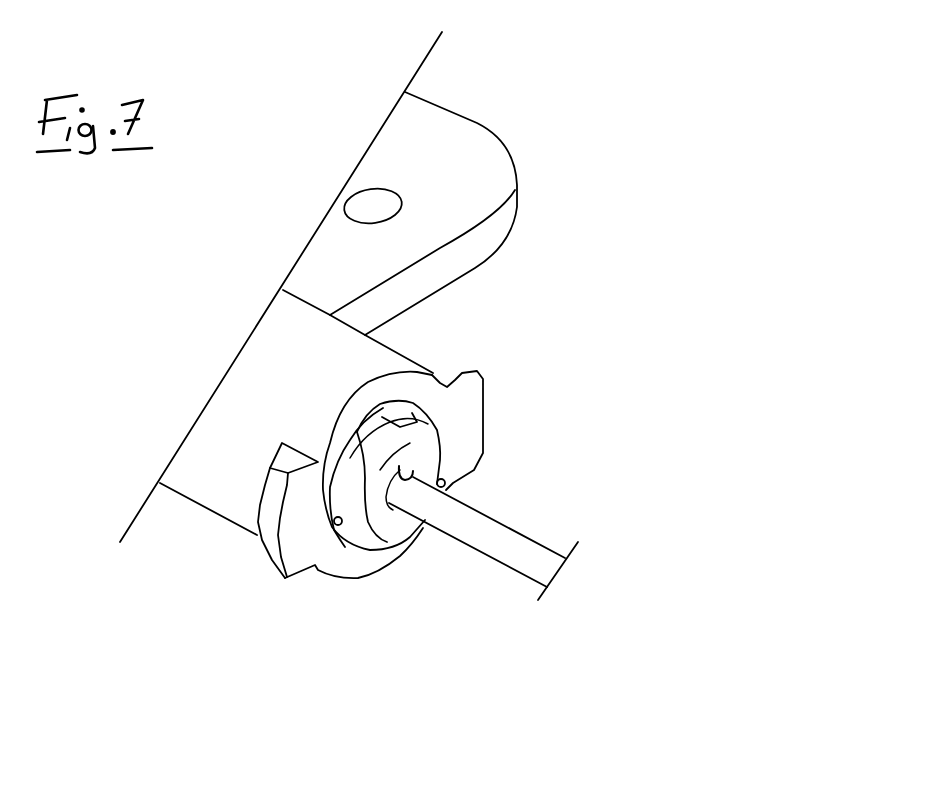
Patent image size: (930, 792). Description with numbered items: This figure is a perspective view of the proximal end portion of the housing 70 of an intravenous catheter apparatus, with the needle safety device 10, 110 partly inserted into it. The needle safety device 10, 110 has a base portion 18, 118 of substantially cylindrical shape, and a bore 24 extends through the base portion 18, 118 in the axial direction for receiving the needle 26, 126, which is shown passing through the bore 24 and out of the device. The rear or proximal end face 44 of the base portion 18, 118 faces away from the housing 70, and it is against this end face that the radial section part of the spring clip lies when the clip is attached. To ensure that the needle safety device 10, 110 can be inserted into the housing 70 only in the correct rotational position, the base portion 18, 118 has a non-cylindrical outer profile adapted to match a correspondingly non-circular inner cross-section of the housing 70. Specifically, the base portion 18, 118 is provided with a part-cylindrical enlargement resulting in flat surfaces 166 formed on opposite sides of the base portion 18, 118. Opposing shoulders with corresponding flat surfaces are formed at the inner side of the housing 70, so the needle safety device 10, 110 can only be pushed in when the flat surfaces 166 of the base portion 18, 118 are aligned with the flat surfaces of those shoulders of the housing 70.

The housing 70 is at (200, 507).
The base portion 18 is at (350, 474).
The base portion 118 is at (350, 455).
The proximal end face 44 is at (398, 529).
The needle safety device 10 is at (461, 363).
The needle safety device 110 is at (399, 425).
The bore 24 is at (411, 474).
The flat surfaces 166 is at (444, 480).
The needle 26 is at (521, 538).
The needle 126 is at (511, 530).